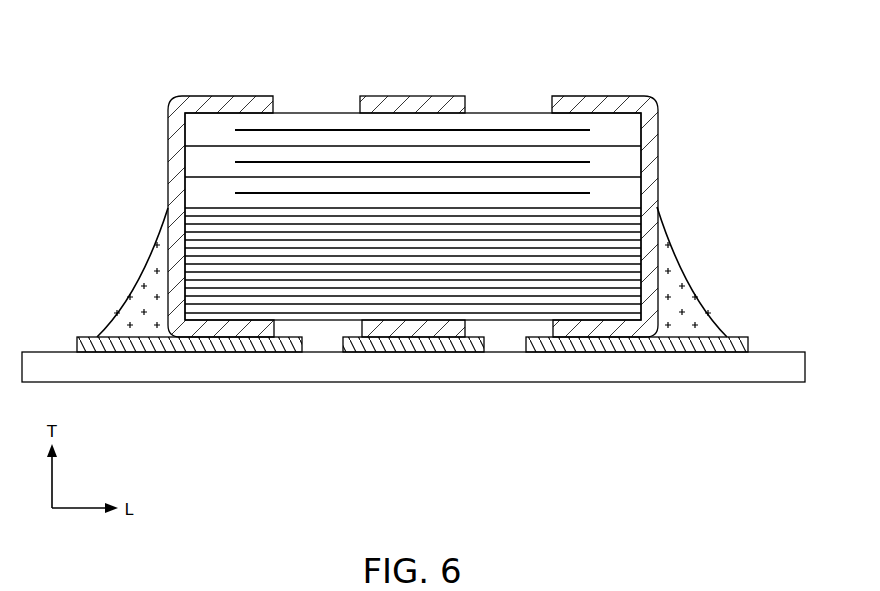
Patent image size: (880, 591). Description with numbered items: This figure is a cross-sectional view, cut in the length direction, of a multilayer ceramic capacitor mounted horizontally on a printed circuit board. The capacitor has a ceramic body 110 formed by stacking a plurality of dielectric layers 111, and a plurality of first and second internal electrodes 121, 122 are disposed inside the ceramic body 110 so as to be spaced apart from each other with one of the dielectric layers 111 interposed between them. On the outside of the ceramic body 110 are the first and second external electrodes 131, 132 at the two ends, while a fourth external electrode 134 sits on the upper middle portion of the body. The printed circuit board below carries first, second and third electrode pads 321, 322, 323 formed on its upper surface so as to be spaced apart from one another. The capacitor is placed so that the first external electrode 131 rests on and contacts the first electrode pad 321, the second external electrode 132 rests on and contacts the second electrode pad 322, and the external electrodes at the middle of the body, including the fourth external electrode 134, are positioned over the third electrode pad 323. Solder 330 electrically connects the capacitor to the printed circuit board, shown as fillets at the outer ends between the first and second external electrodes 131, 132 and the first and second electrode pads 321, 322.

The ceramic body 110 is at (512, 112).
The dielectric layer 111 is at (630, 160).
The first internal electrode 121 is at (310, 145).
The second internal electrode 122 is at (342, 127).
The first external electrode 131 is at (233, 106).
The second external electrode 132 is at (593, 107).
The fourth external electrode 134 is at (452, 105).
The first electrode pad 321 is at (183, 347).
The second electrode pad 322 is at (622, 352).
The third electrode pad 323 is at (413, 352).
The solder 330 is at (675, 288).